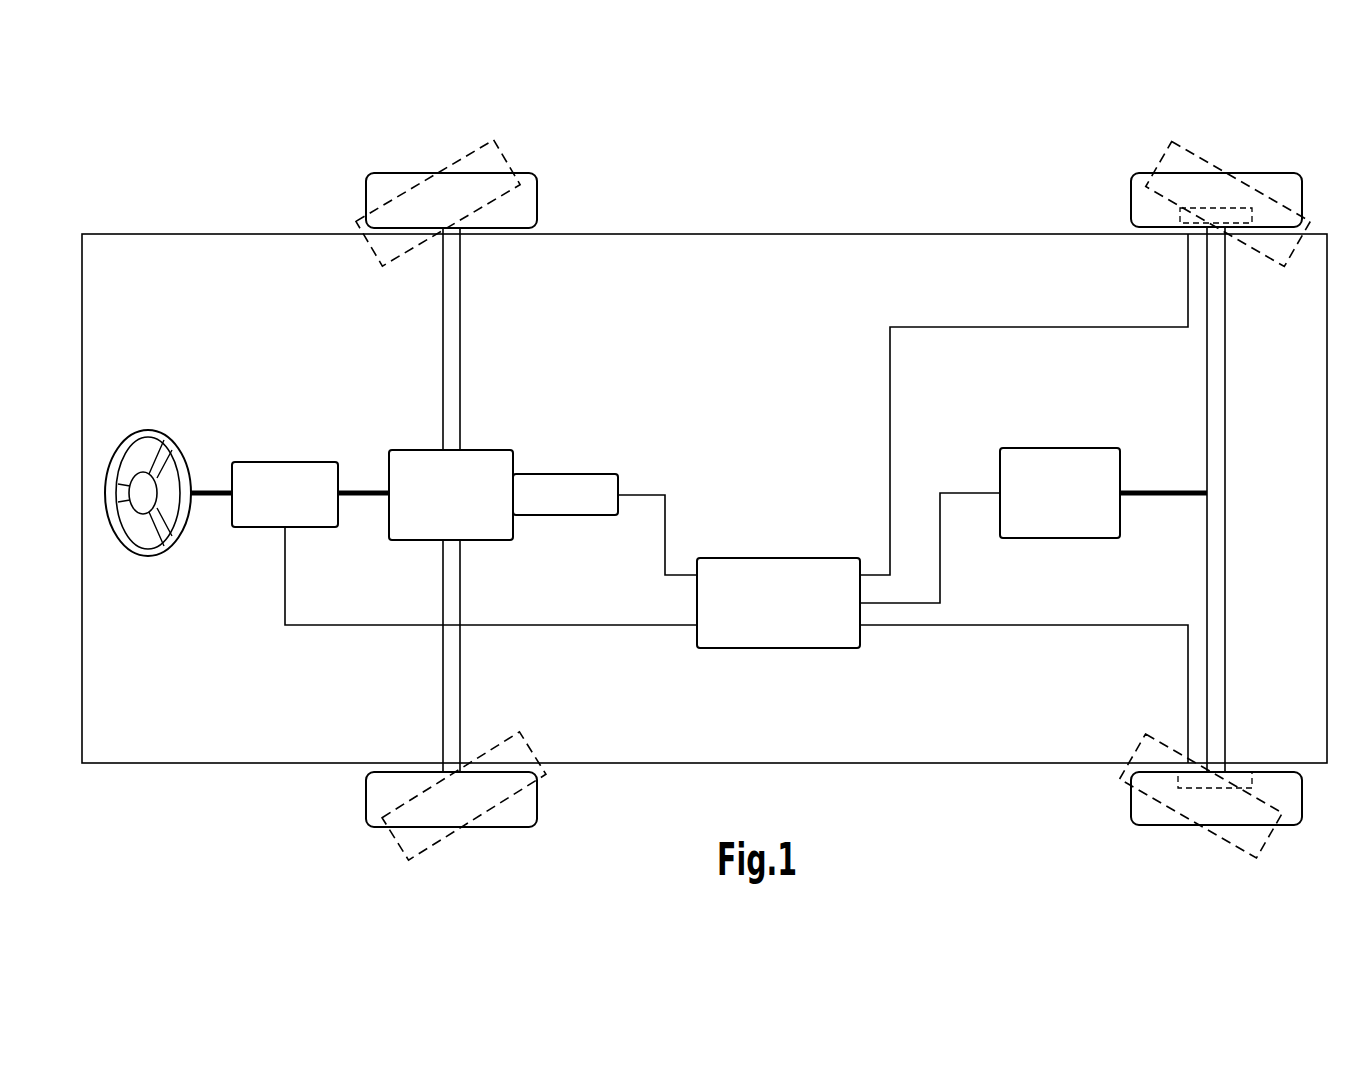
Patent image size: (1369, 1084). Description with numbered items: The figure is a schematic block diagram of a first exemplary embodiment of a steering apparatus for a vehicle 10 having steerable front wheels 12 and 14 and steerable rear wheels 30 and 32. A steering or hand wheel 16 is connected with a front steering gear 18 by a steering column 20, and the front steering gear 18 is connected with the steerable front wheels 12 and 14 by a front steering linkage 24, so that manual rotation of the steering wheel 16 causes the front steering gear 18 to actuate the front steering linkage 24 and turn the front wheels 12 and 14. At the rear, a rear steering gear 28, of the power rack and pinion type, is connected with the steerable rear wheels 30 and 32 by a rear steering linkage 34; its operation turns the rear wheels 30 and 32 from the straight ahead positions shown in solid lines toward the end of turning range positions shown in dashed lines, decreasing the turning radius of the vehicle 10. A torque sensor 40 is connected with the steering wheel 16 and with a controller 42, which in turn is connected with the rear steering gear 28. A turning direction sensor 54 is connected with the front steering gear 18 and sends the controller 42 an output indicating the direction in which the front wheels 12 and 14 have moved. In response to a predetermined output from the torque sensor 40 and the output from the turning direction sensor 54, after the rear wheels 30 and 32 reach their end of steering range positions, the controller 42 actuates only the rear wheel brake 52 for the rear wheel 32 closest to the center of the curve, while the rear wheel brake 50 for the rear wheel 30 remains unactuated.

The vehicle 10 is at (1322, 150).
The steerable front wheel 12 is at (412, 173).
The steerable front wheel 14 is at (478, 828).
The steering wheel 16 is at (150, 432).
The front steering gear 18 is at (503, 468).
The steering column 20 is at (360, 488).
The front steering linkage 24 is at (452, 348).
The rear steering gear 28 is at (1058, 452).
The steerable rear wheel 30 is at (1255, 175).
The steerable rear wheel 32 is at (1158, 815).
The rear steering linkage 34 is at (1213, 412).
The torque sensor 40 is at (287, 462).
The controller 42 is at (773, 573).
The rear wheel brake 50 is at (1178, 218).
The rear wheel brake 52 is at (1245, 783).
The turning direction sensor 54 is at (602, 474).